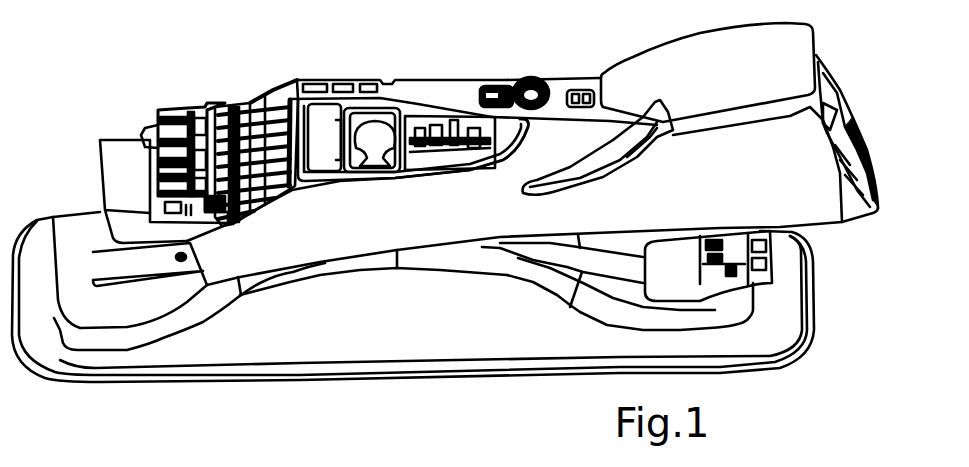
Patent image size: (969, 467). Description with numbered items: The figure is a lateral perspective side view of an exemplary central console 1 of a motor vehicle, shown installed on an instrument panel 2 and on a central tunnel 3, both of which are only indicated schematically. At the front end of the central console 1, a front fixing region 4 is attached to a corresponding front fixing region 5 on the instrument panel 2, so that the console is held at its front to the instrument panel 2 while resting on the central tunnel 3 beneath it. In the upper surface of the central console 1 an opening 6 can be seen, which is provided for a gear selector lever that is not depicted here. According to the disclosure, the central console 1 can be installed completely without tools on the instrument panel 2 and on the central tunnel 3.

The central console 1 is at (482, 121).
The instrument panel 2 is at (127, 175).
The central tunnel 3 is at (833, 289).
The front fixing region 4 is at (250, 108).
The front fixing region 5 is at (183, 137).
The opening 6 is at (414, 124).